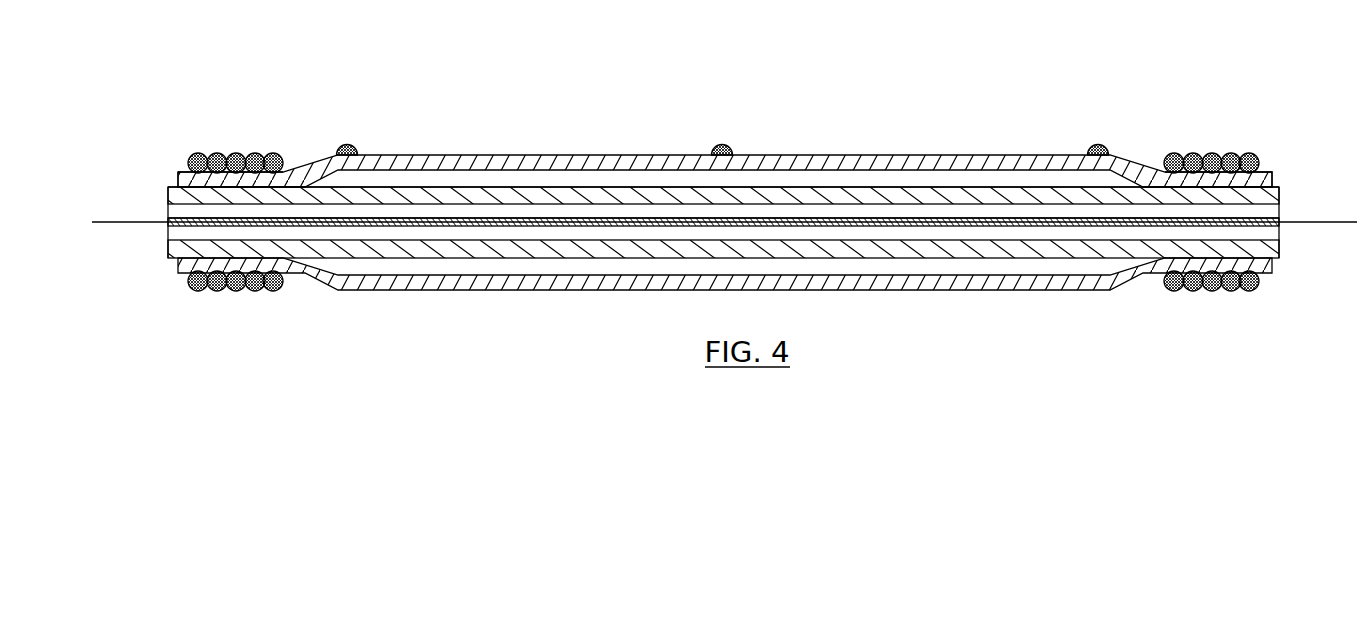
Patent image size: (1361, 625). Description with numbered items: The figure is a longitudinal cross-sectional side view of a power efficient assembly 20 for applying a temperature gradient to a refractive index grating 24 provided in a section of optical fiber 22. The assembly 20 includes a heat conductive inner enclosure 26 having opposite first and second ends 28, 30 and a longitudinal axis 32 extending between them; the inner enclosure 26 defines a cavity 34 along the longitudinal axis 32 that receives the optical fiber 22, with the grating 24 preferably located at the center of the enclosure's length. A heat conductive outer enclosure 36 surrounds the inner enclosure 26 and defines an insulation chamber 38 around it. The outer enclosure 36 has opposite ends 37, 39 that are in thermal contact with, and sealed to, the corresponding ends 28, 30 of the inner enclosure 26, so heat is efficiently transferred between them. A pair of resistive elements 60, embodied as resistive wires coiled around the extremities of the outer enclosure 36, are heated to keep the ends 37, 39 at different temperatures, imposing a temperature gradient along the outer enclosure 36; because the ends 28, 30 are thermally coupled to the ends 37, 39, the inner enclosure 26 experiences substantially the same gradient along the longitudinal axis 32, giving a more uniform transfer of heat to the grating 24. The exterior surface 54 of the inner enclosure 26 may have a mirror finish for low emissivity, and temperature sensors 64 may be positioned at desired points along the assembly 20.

The assembly 20 is at (1185, 103).
The optical fiber 22 is at (1152, 224).
The refractive index grating 24 is at (1010, 225).
The inner enclosure 26 is at (903, 190).
The first end 28 is at (169, 186).
The second end 30 is at (1282, 195).
The longitudinal axis 32 is at (135, 221).
The cavity 34 is at (602, 213).
The outer enclosure 36 is at (810, 161).
The first end 37 is at (180, 265).
The insulation chamber 38 is at (437, 178).
The second end 39 is at (1280, 246).
The exterior surface 54 is at (515, 186).
The resistive elements 60 is at (231, 152).
The temperature sensors 64 is at (343, 139).